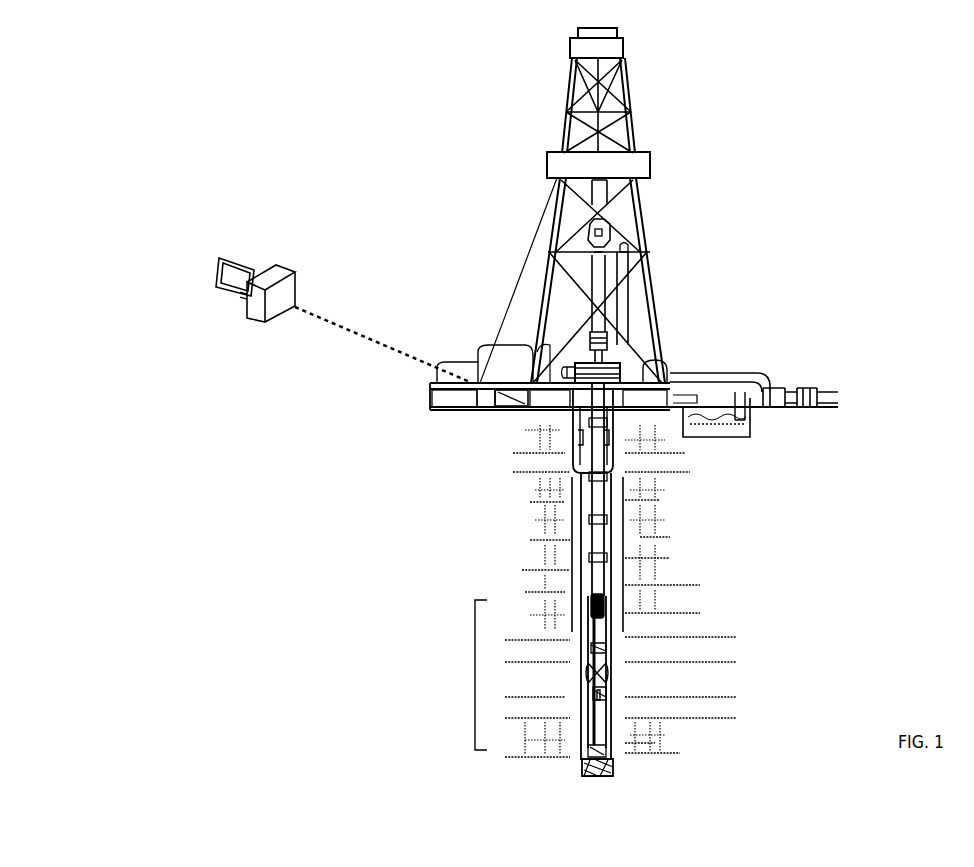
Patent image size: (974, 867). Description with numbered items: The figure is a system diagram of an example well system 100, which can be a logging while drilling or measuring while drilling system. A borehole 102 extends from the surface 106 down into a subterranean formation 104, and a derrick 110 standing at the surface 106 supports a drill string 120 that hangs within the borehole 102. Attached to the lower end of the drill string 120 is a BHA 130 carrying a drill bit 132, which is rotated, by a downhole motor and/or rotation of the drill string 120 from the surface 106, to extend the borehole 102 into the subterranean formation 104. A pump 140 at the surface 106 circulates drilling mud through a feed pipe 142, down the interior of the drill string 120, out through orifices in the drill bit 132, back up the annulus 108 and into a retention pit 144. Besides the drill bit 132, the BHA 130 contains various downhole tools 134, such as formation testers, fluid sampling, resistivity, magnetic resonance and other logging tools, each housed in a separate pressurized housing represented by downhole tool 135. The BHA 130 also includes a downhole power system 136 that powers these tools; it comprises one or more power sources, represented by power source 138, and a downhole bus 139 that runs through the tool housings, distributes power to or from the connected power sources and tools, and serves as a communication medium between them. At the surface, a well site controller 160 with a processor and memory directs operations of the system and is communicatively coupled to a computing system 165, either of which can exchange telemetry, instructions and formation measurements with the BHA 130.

The well system 100 is at (291, 145).
The borehole 102 is at (627, 515).
The subterranean formation 104 is at (313, 549).
The surface 106 is at (430, 408).
The annulus 108 is at (585, 538).
The derrick 110 is at (643, 205).
The drill string 120 is at (607, 582).
The BHA 130 is at (385, 676).
The drill bit 132 is at (580, 762).
The downhole tools 134 is at (475, 680).
The downhole tool 135 is at (610, 706).
The downhole power system 136 is at (556, 624).
The power source 138 is at (607, 608).
The downhole bus 139 is at (585, 665).
The pump 140 is at (822, 390).
The feed pipe 142 is at (700, 375).
The retention pit 144 is at (717, 428).
The well site controller 160 is at (497, 391).
The computing system 165 is at (222, 256).